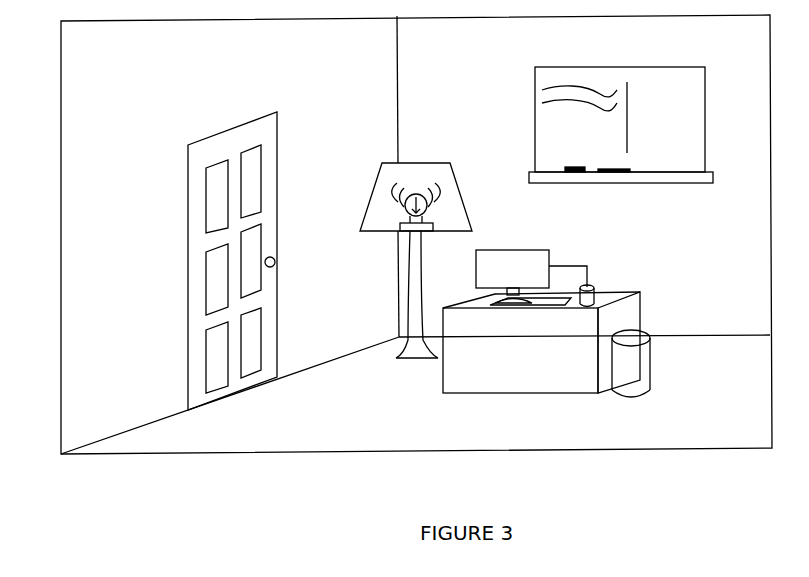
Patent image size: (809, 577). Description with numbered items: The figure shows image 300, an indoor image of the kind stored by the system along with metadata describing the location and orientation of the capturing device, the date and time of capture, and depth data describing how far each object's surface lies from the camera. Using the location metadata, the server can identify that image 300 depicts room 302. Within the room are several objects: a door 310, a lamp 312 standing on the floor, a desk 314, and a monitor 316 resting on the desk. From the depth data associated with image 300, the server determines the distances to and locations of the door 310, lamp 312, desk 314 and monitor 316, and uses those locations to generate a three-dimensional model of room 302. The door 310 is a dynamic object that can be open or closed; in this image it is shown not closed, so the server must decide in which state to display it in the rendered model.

The image 300 is at (120, 500).
The room 302 is at (80, 133).
The door 310 is at (188, 300).
The lamp 312 is at (390, 163).
The desk 314 is at (443, 368).
The monitor 316 is at (549, 263).